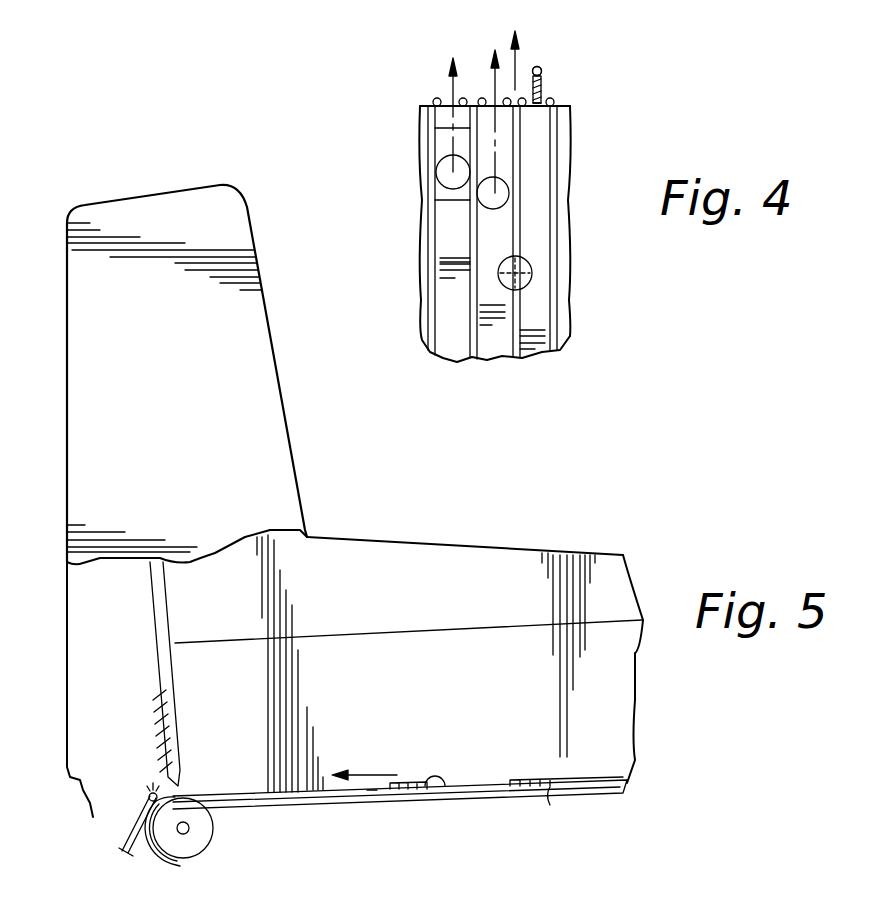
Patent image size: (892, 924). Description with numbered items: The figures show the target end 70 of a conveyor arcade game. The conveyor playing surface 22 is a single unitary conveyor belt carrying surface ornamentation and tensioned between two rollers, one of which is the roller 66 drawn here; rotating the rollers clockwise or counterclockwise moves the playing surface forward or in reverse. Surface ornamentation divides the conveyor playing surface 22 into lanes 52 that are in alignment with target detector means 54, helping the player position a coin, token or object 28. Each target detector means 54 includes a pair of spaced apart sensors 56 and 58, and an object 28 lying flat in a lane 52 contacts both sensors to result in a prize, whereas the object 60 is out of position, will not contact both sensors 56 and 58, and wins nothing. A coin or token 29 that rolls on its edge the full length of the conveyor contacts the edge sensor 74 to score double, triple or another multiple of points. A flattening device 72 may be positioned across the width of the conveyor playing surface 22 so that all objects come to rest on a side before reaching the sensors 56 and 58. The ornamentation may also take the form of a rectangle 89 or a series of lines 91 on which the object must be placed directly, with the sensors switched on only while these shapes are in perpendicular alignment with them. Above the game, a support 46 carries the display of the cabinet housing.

In FIG. 5, the conveyor playing surface 22 is at (550, 785).
In FIG. 4, the coin, token or object 28 is at (440, 175).
In FIG. 5, the coin, token or object 28 is at (445, 790).
In FIG. 4, the coin or token 29 is at (550, 87).
In FIG. 5, the support 46 is at (166, 312).
In FIG. 4, the lane 52 is at (493, 232).
In FIG. 4, the target detector means 54 is at (555, 91).
In FIG. 4, the sensor 56 is at (436, 102).
In FIG. 4, the sensor 58 is at (481, 99).
In FIG. 5, the sensor 58 is at (140, 803).
In FIG. 4, the object 60 is at (533, 268).
In FIG. 5, the roller 66 is at (197, 838).
In FIG. 5, the target end 70 is at (103, 650).
In FIG. 5, the flattening device 72 is at (168, 778).
In FIG. 4, the sensor 74 is at (543, 84).
In FIG. 4, the rectangle 89 is at (440, 143).
In FIG. 4, the series of lines 91 is at (440, 267).